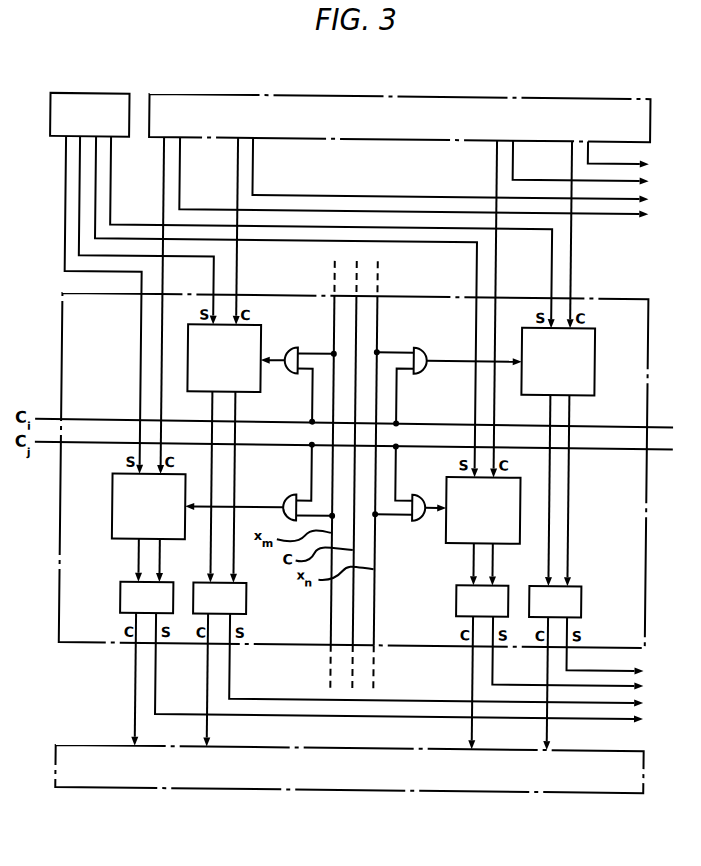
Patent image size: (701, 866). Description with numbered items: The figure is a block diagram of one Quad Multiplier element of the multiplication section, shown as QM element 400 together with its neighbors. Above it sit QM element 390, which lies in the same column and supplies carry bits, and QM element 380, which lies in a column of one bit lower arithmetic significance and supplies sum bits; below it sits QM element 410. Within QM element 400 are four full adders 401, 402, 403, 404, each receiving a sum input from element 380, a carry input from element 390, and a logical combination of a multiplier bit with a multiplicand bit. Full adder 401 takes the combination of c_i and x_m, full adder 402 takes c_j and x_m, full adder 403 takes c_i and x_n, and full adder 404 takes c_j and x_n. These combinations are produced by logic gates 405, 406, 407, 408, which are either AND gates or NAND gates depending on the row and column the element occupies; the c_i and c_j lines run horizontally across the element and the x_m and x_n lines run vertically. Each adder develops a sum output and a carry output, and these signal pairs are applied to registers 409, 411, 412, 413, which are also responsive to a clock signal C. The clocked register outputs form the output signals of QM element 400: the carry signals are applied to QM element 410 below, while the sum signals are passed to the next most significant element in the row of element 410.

The QM element 380 is at (66, 93).
The QM element 390 is at (363, 93).
The QM element 400 is at (596, 292).
The full adder 401 is at (256, 323).
The full adder 402 is at (126, 540).
The full adder 403 is at (592, 323).
The full adder 404 is at (461, 541).
The logic gate 405 is at (290, 371).
The logic gate 406 is at (289, 492).
The logic gate 407 is at (420, 370).
The logic gate 408 is at (419, 491).
The register 409 is at (122, 595).
The QM element 410 is at (337, 787).
The register 411 is at (248, 597).
The register 412 is at (458, 596).
The register 413 is at (583, 598).